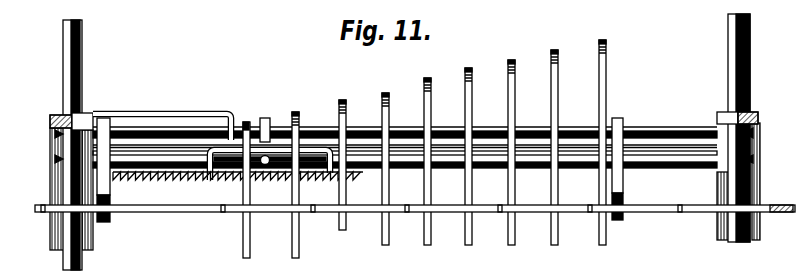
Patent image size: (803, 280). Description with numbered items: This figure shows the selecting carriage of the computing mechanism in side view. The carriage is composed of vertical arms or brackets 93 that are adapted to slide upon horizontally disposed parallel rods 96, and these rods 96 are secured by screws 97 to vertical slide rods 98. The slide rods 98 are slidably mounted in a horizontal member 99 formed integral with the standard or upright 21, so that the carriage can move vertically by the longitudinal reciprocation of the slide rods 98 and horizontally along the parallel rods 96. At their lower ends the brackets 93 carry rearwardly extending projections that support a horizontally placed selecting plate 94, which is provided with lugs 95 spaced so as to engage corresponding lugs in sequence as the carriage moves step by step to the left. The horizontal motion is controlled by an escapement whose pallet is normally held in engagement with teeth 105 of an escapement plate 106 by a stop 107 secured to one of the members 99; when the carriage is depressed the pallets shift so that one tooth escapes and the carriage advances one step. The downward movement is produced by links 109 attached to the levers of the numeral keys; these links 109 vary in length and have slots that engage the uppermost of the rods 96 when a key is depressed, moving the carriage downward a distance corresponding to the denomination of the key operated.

The standard 21 is at (52, 191).
The vertical arms or brackets 93 is at (105, 126).
The selecting plate 94 is at (668, 212).
The lugs 95 is at (39, 213).
The parallel rods 96 is at (497, 169).
The screws 97 is at (56, 144).
The vertical slide rods 98 is at (66, 259).
The horizontal member 99 is at (50, 122).
The teeth 105 is at (270, 177).
The escapement plate 106 is at (213, 197).
The stop 107 is at (193, 116).
The links 109 is at (386, 190).